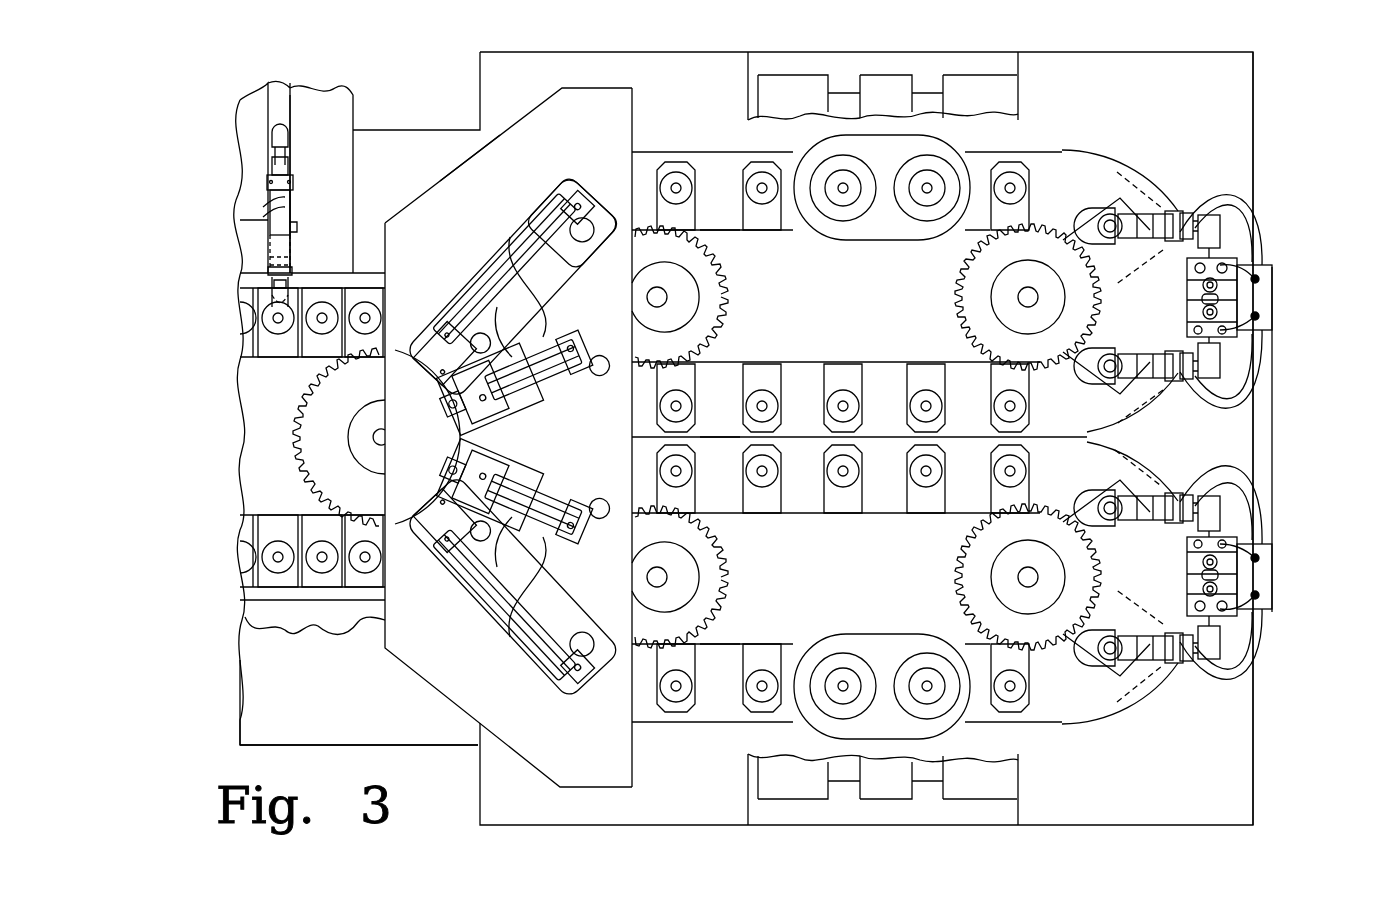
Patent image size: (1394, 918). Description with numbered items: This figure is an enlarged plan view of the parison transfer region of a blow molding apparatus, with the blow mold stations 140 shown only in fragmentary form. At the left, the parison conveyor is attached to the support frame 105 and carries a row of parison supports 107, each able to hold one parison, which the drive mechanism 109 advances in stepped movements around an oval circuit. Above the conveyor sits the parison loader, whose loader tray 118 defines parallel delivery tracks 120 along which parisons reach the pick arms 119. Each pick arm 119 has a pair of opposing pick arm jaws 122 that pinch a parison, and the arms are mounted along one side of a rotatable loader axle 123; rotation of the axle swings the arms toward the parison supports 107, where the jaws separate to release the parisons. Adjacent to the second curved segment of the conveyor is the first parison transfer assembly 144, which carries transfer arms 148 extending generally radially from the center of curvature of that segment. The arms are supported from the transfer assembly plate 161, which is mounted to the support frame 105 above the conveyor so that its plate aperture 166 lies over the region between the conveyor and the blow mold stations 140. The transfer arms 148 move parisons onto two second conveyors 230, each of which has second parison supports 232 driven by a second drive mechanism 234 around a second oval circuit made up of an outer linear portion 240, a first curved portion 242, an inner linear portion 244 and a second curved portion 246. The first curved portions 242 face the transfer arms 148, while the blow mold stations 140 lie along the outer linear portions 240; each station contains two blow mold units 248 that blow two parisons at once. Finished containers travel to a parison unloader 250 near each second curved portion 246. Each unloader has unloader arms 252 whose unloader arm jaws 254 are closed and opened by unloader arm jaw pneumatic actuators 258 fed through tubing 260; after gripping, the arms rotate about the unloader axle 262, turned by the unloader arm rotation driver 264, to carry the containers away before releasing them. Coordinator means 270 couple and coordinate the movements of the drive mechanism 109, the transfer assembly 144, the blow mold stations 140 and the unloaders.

The support frame 105 is at (262, 678).
The parison supports 107 is at (275, 335).
The drive mechanism 109 is at (290, 440).
The loader tray 118 is at (320, 110).
The pick arms 119 is at (268, 186).
The delivery tracks 120 is at (278, 96).
The pick arm jaws 122 is at (268, 140).
The loader axle 123 is at (250, 222).
The blow mold stations 140 is at (1020, 62).
The first parison transfer assembly 144 is at (390, 222).
The transfer arms 148 is at (433, 343).
The transfer assembly plate 161 is at (462, 195).
The plate aperture 166 is at (562, 180).
The second conveyors 230 is at (652, 150).
The second parison supports 232 is at (676, 168).
The second drive mechanism 234 is at (720, 345).
The outer linear portion 240 is at (1093, 150).
The first curved portion 242 is at (605, 380).
The inner linear portion 244 is at (793, 232).
The second curved portion 246 is at (1183, 200).
The blow mold units 248 is at (918, 222).
The parison unloader 250 is at (1275, 268).
The unloader arms 252 is at (1178, 210).
The unloader arm jaws 254 is at (1135, 192).
The unloader arm jaw pneumatic actuators 258 is at (1190, 222).
The tubing 260 is at (1228, 225).
The unloader axle 262 is at (1215, 250).
The unloader arm rotation driver 264 is at (1268, 320).
The coordinator means 270 is at (1240, 62).